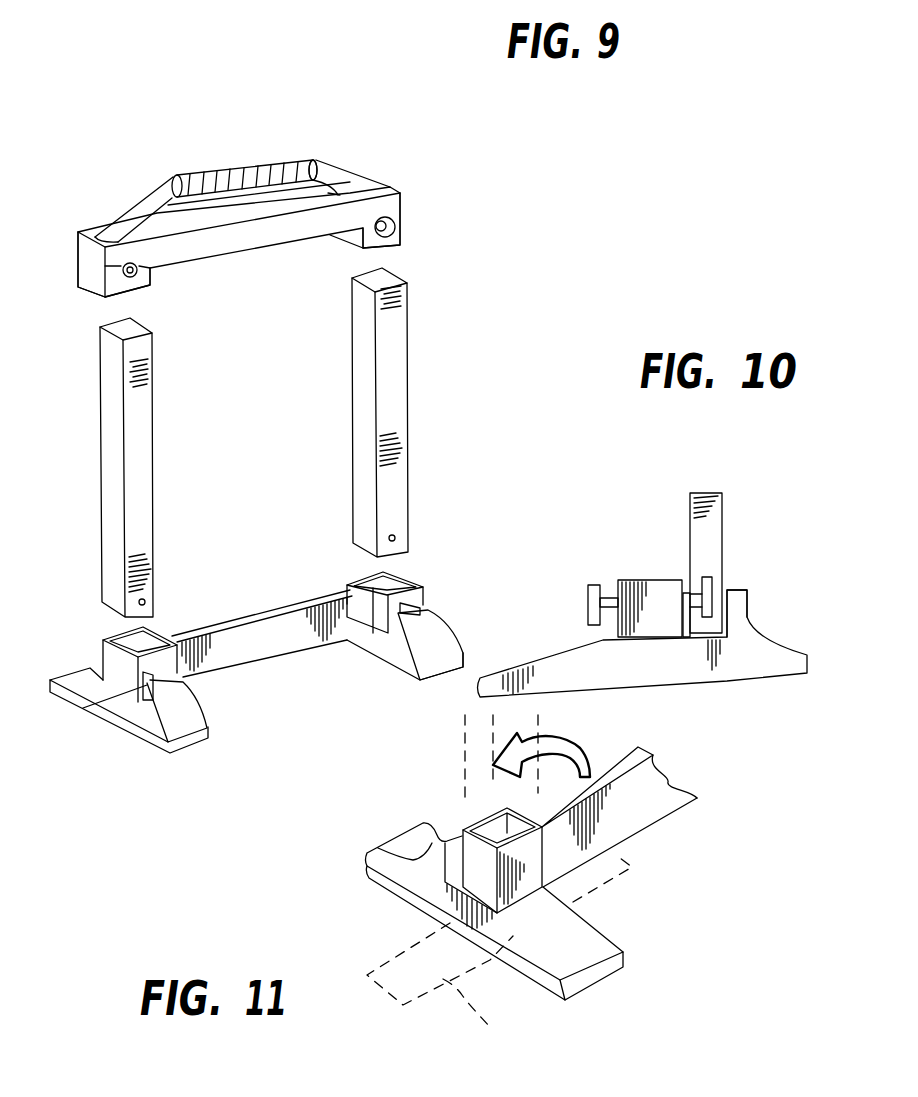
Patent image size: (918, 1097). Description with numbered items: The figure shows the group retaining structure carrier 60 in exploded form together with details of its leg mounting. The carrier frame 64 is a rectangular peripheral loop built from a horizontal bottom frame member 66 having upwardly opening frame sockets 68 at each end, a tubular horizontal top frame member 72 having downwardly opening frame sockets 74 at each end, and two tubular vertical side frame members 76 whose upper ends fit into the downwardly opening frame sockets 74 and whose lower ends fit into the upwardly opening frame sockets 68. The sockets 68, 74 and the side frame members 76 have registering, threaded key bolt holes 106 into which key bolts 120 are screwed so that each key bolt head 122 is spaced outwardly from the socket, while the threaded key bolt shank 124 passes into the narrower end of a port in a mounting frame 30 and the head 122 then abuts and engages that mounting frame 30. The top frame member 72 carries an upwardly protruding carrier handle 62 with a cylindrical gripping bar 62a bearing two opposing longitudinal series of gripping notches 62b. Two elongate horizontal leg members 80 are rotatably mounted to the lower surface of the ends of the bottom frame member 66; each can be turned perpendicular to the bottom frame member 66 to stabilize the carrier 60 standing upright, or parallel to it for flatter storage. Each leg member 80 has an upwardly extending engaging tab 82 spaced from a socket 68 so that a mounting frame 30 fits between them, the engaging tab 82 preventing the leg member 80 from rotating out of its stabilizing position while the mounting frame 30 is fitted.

In FIG. 10, the universal mounting frame 30 is at (710, 525).
In FIG. 9, the group retaining structure carrier 60 is at (592, 235).
In FIG. 9, the carrier handle 62 is at (207, 170).
In FIG. 9, the cylindrical gripping bar 62a is at (263, 158).
In FIG. 9, the gripping notches 62b is at (282, 150).
In FIG. 9, the carrier frame 64 is at (308, 242).
In FIG. 11, the carrier frame 64 is at (653, 802).
In FIG. 9, the bottom frame member 66 is at (265, 612).
In FIG. 9, the upwardly opening frame socket 68 is at (113, 637).
In FIG. 10, the upwardly opening frame socket 68 is at (650, 580).
In FIG. 11, the upwardly opening frame socket 68 is at (483, 810).
In FIG. 9, the top frame member 72 is at (212, 252).
In FIG. 9, the downwardly opening frame socket 74 is at (97, 300).
In FIG. 9, the side frame member 76 is at (108, 433).
In FIG. 9, the leg member 80 is at (123, 732).
In FIG. 10, the leg member 80 is at (540, 653).
In FIG. 11, the leg member 80 is at (527, 977).
In FIG. 9, the engaging tab 82 is at (190, 693).
In FIG. 10, the engaging tab 82 is at (748, 592).
In FIG. 11, the engaging tab 82 is at (403, 830).
In FIG. 9, the key bolt hole 106 is at (150, 275).
In FIG. 9, the key bolt 120 is at (79, 235).
In FIG. 10, the key bolt head 122 is at (590, 587).
In FIG. 10, the key bolt shank 124 is at (610, 593).